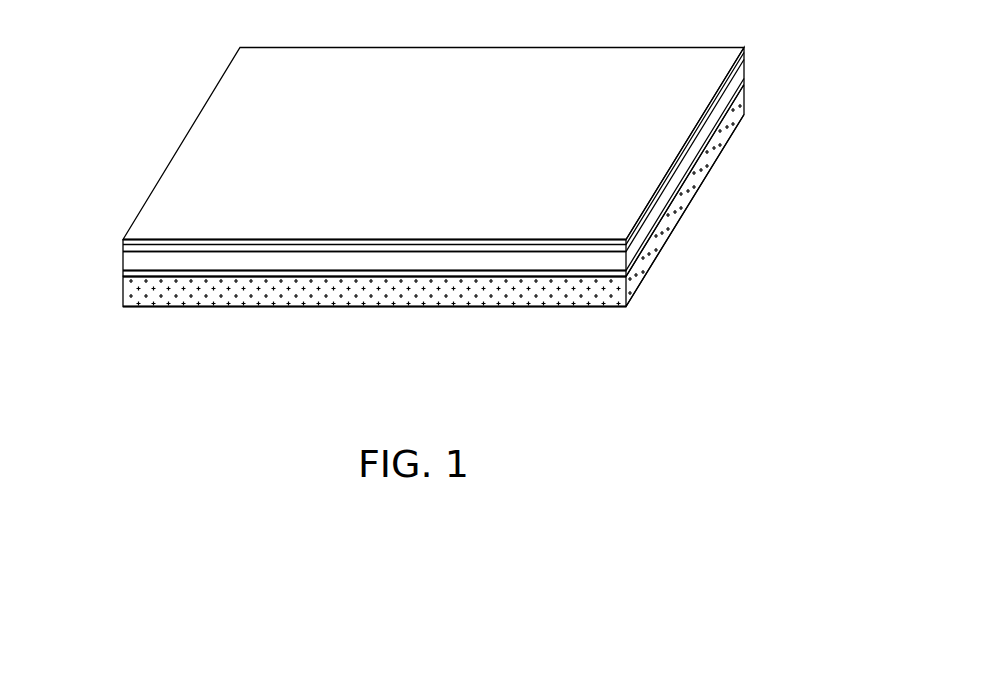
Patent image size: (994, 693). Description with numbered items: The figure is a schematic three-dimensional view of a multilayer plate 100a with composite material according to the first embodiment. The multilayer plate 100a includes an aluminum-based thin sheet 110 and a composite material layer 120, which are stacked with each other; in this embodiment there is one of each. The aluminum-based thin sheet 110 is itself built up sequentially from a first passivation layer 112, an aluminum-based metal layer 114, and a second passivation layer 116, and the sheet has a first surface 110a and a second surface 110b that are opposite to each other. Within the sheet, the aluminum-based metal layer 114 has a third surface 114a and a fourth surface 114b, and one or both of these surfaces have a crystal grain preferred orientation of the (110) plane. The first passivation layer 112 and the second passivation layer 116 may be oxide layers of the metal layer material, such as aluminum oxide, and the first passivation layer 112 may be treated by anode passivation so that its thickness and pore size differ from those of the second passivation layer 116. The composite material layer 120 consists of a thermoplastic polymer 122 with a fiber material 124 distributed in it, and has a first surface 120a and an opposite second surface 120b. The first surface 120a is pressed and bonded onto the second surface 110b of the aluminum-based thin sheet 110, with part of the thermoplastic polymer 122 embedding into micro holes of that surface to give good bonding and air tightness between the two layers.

The multilayer plate with composite material 100a is at (160, 49).
The aluminum-based thin sheet 110 is at (785, 182).
The first surface 110a is at (148, 240).
The second surface 110b is at (138, 278).
The first passivation layer 112 is at (634, 246).
The aluminum-based metal layer 114 is at (628, 260).
The third surface 114a is at (218, 250).
The fourth surface 114b is at (202, 271).
The second passivation layer 116 is at (628, 277).
The composite material layer 120 is at (750, 295).
The first surface 120a is at (512, 278).
The second surface 120b is at (418, 307).
The thermoplastic polymer 122 is at (632, 295).
The fiber material 124 is at (597, 306).